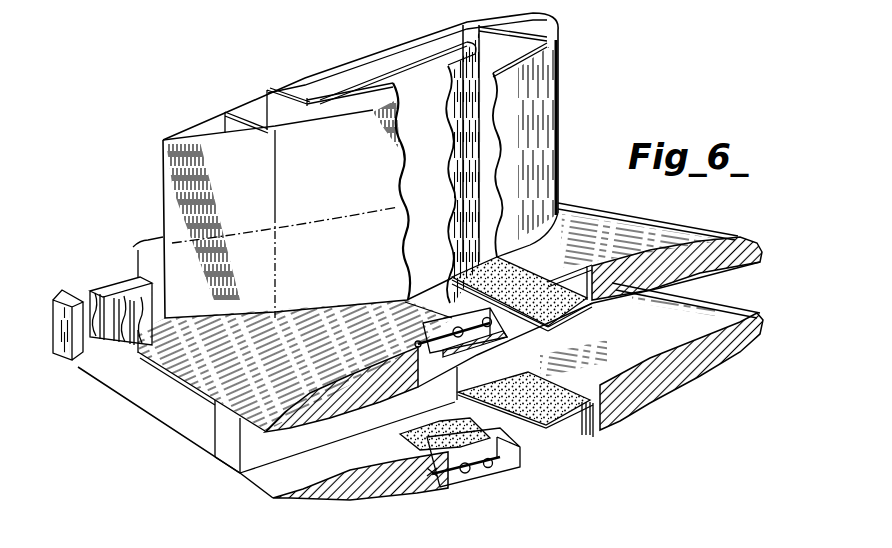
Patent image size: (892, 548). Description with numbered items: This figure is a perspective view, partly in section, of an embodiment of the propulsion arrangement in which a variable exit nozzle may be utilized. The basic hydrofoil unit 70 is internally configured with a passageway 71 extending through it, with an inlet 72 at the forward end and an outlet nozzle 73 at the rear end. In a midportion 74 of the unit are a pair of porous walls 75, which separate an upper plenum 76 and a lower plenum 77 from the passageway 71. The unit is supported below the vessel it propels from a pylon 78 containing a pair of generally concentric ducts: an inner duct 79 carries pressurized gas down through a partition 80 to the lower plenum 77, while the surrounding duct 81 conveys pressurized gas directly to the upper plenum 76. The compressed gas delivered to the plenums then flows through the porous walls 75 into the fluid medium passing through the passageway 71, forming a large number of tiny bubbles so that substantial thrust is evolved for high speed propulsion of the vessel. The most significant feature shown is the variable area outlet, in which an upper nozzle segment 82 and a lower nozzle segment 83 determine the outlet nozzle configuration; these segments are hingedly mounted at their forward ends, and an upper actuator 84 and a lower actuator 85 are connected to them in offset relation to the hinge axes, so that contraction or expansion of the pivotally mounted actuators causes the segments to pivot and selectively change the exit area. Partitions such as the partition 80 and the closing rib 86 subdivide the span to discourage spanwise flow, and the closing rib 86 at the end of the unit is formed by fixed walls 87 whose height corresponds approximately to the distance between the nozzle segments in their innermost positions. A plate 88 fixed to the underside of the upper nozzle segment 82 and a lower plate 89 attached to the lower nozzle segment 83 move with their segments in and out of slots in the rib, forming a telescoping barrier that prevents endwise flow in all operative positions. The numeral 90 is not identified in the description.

The basic hydrofoil unit 70 is at (740, 360).
The passageway 71 is at (672, 372).
The inlet 72 is at (715, 281).
The outlet nozzle 73 is at (302, 474).
The midportion 74 is at (455, 400).
The porous walls 75 is at (547, 308).
The upper plenum 76 is at (600, 306).
The lower plenum 77 is at (552, 442).
The pylon 78 is at (527, 123).
The inner duct 79 is at (423, 78).
The partition 80 is at (588, 304).
The surrounding duct 81 is at (557, 34).
The upper nozzle segment 82 is at (222, 396).
The lower nozzle segment 83 is at (330, 495).
The upper actuator 84 is at (442, 310).
The lower actuator 85 is at (475, 478).
The closing rib 86 is at (63, 350).
The fixed walls 87 is at (138, 282).
The plate 88 is at (107, 338).
The lower plate 89 is at (128, 336).
The bracket 90 is at (143, 393).